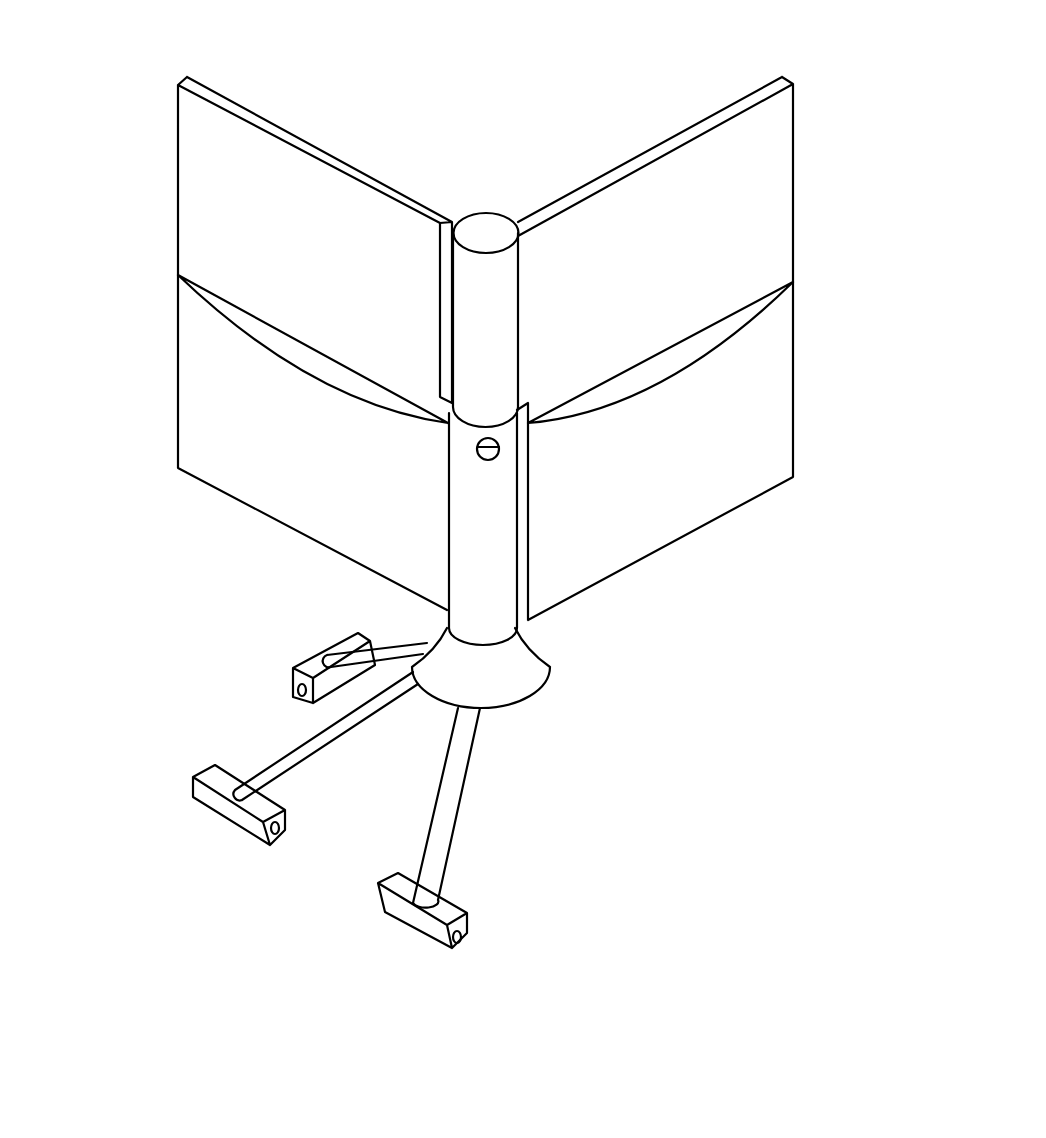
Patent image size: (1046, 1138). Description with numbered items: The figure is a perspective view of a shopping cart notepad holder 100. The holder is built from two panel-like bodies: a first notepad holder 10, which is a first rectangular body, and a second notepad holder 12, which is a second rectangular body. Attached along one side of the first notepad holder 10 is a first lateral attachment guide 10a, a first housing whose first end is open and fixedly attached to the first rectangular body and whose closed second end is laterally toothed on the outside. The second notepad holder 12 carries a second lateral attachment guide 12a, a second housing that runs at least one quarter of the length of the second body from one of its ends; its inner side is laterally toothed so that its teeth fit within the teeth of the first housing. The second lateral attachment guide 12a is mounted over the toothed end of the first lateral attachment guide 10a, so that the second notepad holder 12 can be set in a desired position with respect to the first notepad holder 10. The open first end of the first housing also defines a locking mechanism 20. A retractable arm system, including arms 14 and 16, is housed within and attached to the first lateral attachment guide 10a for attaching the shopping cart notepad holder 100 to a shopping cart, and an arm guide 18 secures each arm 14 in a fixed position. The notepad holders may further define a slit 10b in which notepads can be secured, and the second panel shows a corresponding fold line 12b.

The shopping cart notepad holder 100 is at (470, 138).
The first notepad holder 10 is at (346, 283).
The first lateral attachment guide 10a is at (493, 553).
The slit 10b is at (270, 342).
The second notepad holder 12 is at (658, 283).
The second lateral attachment guide 12a is at (502, 273).
The second panel fold line 12b is at (723, 328).
The arm 14 is at (453, 797).
The retractable arm system component 16 is at (292, 683).
The arm guide 18 is at (505, 673).
The locking mechanism 20 is at (500, 450).